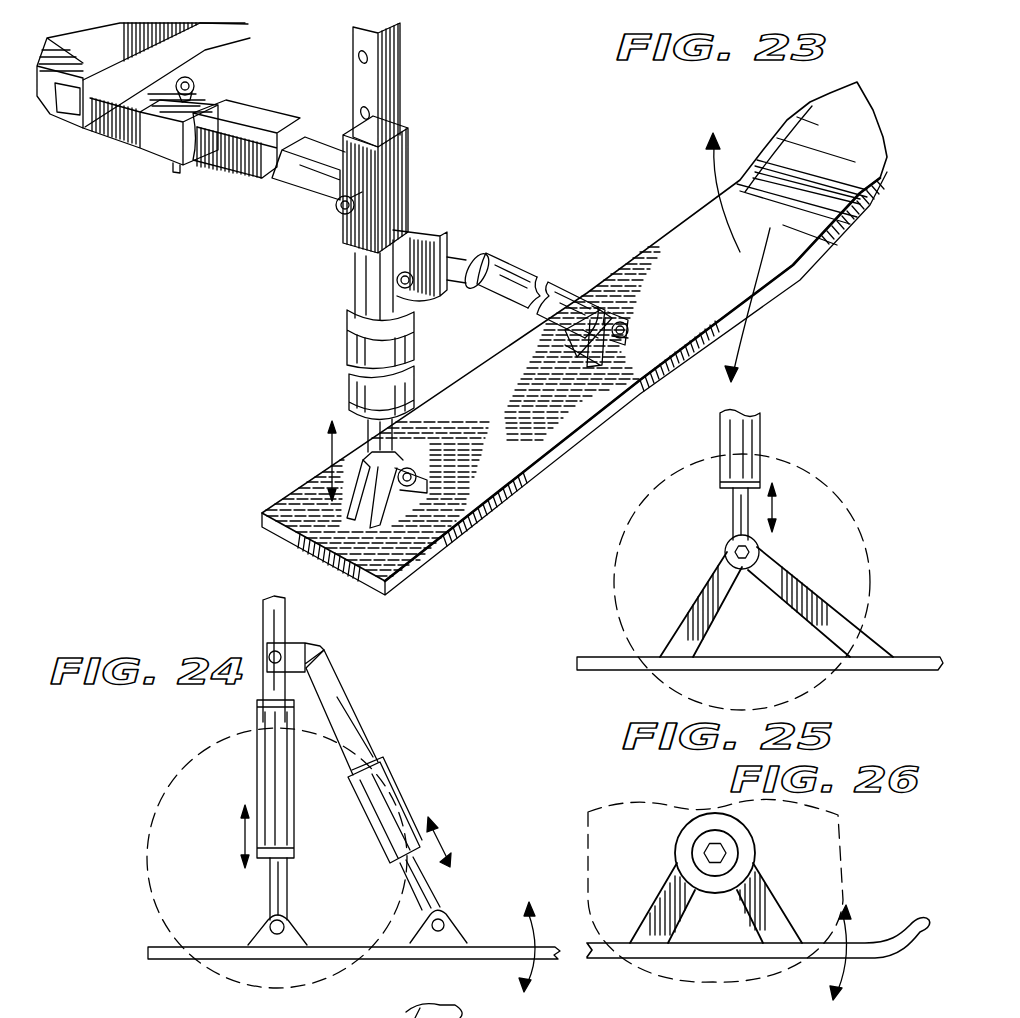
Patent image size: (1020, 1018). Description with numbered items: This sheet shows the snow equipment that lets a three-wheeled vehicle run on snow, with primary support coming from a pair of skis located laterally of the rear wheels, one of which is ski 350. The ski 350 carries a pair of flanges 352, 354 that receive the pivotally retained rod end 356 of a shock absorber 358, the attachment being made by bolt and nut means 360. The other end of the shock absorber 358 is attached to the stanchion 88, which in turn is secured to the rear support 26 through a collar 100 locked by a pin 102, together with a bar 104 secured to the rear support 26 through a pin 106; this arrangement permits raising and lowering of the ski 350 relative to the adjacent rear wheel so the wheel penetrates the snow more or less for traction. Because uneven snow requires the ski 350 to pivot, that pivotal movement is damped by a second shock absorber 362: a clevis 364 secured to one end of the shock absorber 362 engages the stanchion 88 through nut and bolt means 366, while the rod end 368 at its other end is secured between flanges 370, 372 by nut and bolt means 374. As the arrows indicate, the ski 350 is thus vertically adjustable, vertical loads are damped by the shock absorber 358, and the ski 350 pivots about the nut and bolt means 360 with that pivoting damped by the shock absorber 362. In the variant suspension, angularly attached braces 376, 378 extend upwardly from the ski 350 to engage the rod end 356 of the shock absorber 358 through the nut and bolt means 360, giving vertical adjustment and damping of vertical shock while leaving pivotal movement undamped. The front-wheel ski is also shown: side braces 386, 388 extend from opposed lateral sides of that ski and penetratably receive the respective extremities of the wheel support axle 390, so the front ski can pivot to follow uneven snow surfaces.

In FIG. 23, the rear support 26 is at (118, 146).
In FIG. 23, the bar 104 is at (212, 172).
In FIG. 23, the pin 106 is at (193, 80).
In FIG. 23, the pin 102 is at (320, 215).
In FIG. 23, the collar 100 is at (410, 203).
In FIG. 23, the stanchion 88 is at (353, 296).
In FIG. 24, the stanchion 88 is at (262, 624).
In FIG. 23, the clevis 364 is at (438, 230).
In FIG. 24, the clevis 364 is at (296, 643).
In FIG. 23, the nut and bolt means 366 is at (412, 288).
In FIG. 23, the shock absorber 362 is at (508, 258).
In FIG. 24, the shock absorber 362 is at (385, 775).
In FIG. 23, the rod end 368 is at (598, 293).
In FIG. 24, the rod end 368 is at (432, 895).
In FIG. 23, the flange 370 is at (572, 352).
In FIG. 23, the flange 372 is at (629, 338).
In FIG. 23, the nut and bolt means 374 is at (627, 320).
In FIG. 23, the shock absorber 358 is at (348, 340).
In FIG. 24, the shock absorber 358 is at (262, 752).
In FIG. 25, the shock absorber 358 is at (722, 420).
In FIG. 23, the rod end 356 is at (405, 444).
In FIG. 24, the rod end 356 is at (272, 880).
In FIG. 25, the rod end 356 is at (733, 510).
In FIG. 23, the nut and bolt means 360 is at (421, 478).
In FIG. 24, the nut and bolt means 360 is at (292, 925).
In FIG. 25, the nut and bolt means 360 is at (760, 552).
In FIG. 23, the flange 352 is at (338, 512).
In FIG. 23, the flange 354 is at (395, 510).
In FIG. 23, the ski 350 is at (563, 428).
In FIG. 24, the ski 350 is at (410, 952).
In FIG. 25, the ski 350 is at (597, 657).
In FIG. 25, the brace 376 is at (712, 608).
In FIG. 25, the brace 378 is at (806, 608).
In FIG. 26, the side brace 386 is at (661, 900).
In FIG. 26, the side brace 388 is at (790, 905).
In FIG. 26, the wheel support axle 390 is at (723, 855).